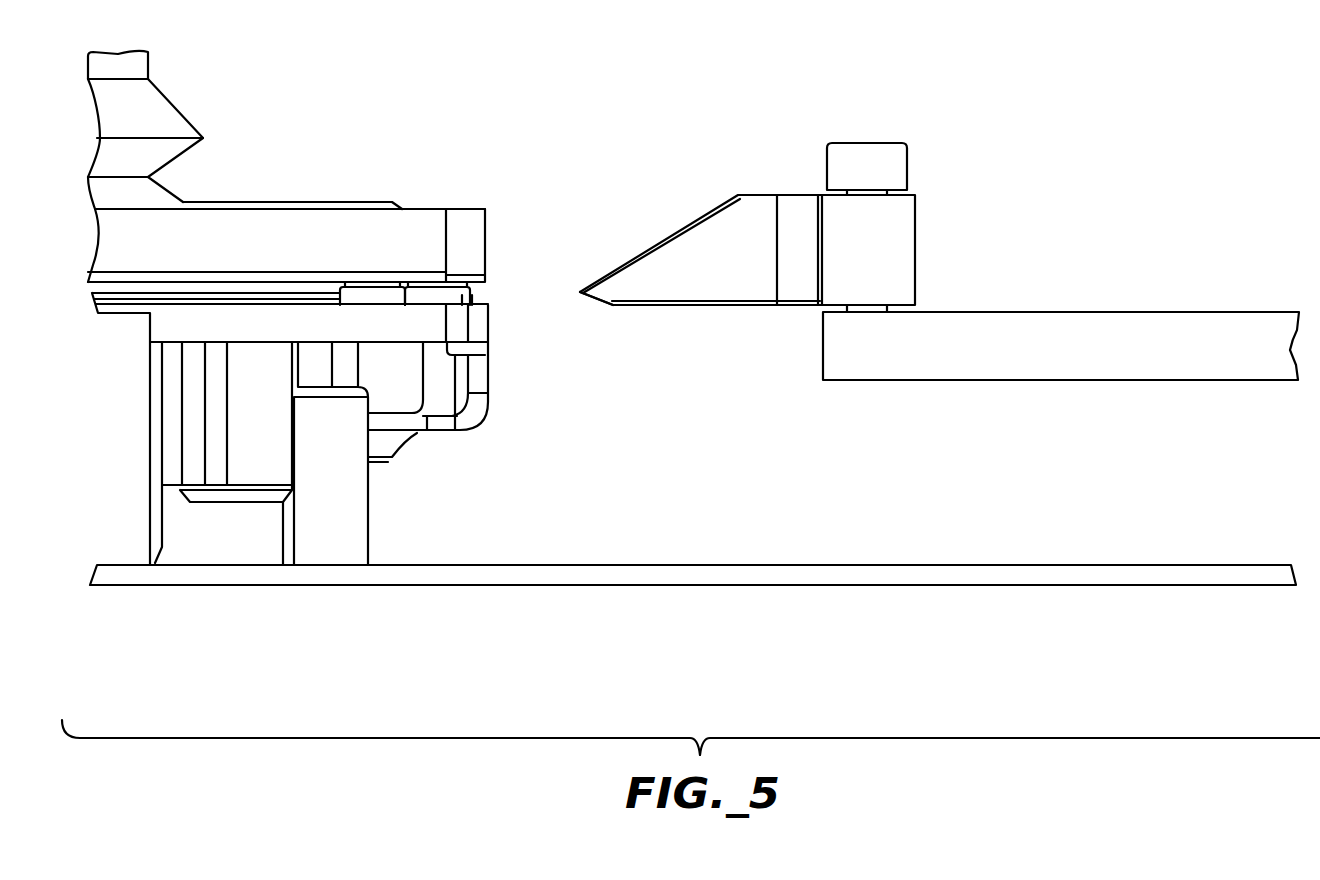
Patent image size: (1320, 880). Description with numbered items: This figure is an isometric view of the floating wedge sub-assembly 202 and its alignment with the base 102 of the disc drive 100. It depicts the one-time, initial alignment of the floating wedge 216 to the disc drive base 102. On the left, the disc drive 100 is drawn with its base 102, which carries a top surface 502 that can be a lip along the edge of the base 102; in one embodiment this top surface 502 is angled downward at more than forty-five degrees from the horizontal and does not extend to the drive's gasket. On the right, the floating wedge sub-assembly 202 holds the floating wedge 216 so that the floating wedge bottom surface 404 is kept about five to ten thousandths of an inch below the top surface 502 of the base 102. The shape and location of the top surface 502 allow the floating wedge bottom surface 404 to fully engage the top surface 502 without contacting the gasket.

The disc drive 100 is at (338, 308).
The base 102 is at (482, 423).
The top surface 502 is at (478, 296).
The floating wedge sub-assembly 202 is at (939, 257).
The floating wedge 216 is at (760, 202).
The floating wedge bottom surface 404 is at (593, 302).